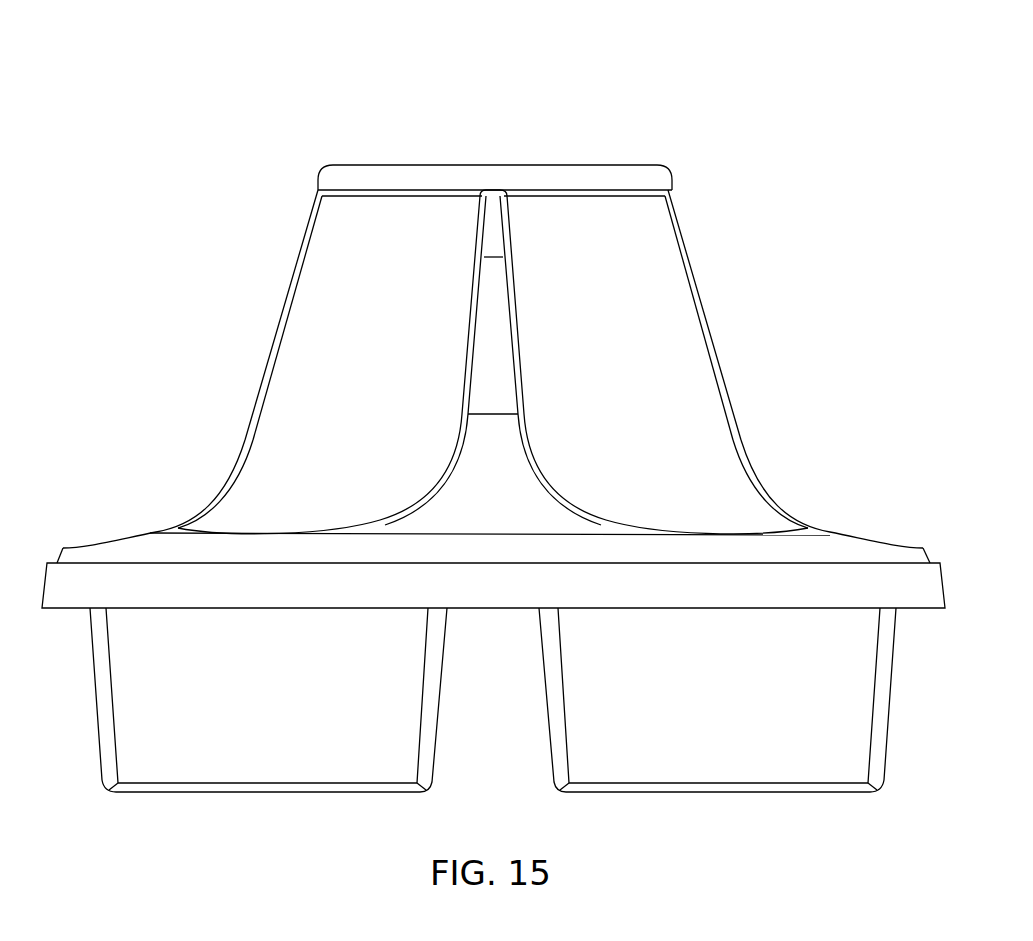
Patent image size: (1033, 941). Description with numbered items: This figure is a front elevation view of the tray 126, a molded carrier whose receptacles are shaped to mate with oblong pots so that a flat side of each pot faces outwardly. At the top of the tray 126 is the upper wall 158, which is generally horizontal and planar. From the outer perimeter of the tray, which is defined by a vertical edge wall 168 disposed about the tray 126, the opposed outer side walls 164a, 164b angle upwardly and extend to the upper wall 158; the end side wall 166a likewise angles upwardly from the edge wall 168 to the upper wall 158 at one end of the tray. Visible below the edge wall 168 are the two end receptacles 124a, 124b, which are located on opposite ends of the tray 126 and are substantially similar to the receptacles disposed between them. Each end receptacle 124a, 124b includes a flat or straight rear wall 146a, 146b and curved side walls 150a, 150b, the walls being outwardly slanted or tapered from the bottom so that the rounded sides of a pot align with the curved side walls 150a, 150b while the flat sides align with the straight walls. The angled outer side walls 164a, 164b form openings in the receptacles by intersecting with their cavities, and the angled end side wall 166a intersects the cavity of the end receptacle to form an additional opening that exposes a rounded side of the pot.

The tray 126 is at (216, 76).
The upper wall 158 is at (490, 164).
The end receptacle 124a is at (670, 285).
The end receptacle 124b is at (302, 317).
The outer side wall 164a is at (262, 411).
The outer side wall 164b is at (722, 383).
The rear wall 146a is at (524, 396).
The rear wall 146b is at (462, 404).
The curved side wall 150a is at (630, 343).
The curved side wall 150b is at (389, 343).
The end side wall 166a is at (488, 467).
The vertical edge wall 168 is at (58, 578).